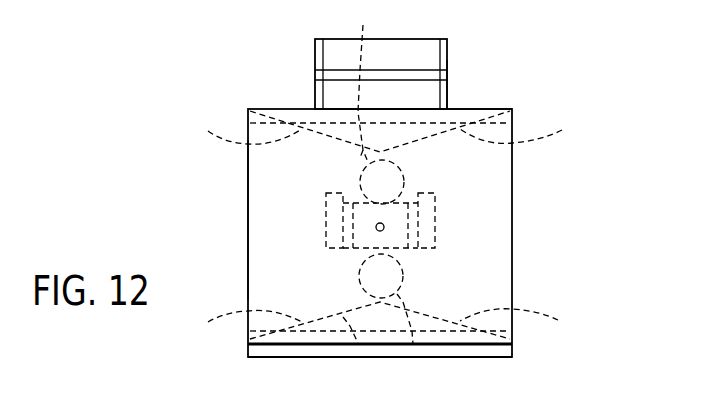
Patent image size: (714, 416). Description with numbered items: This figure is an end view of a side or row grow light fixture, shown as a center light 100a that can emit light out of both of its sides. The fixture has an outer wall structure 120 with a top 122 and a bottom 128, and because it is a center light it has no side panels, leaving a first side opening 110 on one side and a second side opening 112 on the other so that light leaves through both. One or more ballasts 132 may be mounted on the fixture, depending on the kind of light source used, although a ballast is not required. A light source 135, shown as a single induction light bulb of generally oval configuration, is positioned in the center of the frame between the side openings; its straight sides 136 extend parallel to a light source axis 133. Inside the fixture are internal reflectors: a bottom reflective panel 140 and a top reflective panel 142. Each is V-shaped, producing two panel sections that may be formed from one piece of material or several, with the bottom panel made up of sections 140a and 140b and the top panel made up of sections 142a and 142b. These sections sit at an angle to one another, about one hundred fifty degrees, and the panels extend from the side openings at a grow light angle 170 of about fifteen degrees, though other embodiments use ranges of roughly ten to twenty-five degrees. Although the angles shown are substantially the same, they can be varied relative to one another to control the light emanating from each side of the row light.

The center light 100a is at (533, 92).
The first side opening 110 is at (512, 219).
The second side opening 112 is at (248, 198).
The outer wall structure 120 is at (483, 347).
The top 122 is at (468, 109).
The bottom 128 is at (297, 358).
The ballast 132 is at (395, 38).
The light source axis 133 is at (377, 223).
The light source 135 is at (318, 229).
The straight sides 136 is at (413, 370).
The bottom reflective panel 140 is at (425, 304).
The bottom reflective panel section 140a is at (232, 328).
The bottom reflective panel section 140b is at (532, 328).
The top reflective panel 142 is at (425, 150).
The top reflective panel section 142a is at (233, 125).
The top reflective panel section 142b is at (534, 124).
The grow light angle 170 is at (358, 345).